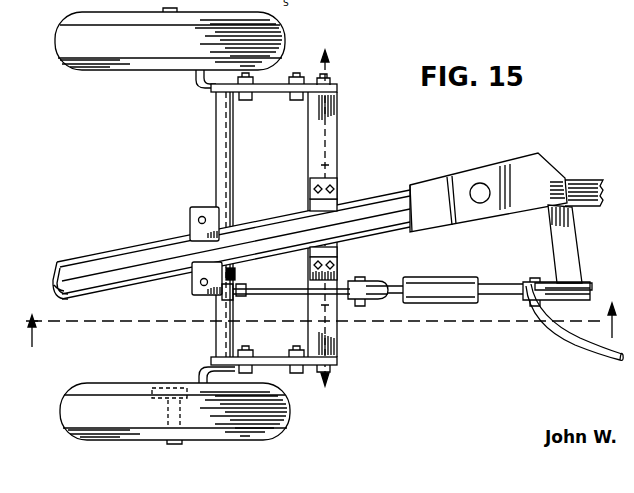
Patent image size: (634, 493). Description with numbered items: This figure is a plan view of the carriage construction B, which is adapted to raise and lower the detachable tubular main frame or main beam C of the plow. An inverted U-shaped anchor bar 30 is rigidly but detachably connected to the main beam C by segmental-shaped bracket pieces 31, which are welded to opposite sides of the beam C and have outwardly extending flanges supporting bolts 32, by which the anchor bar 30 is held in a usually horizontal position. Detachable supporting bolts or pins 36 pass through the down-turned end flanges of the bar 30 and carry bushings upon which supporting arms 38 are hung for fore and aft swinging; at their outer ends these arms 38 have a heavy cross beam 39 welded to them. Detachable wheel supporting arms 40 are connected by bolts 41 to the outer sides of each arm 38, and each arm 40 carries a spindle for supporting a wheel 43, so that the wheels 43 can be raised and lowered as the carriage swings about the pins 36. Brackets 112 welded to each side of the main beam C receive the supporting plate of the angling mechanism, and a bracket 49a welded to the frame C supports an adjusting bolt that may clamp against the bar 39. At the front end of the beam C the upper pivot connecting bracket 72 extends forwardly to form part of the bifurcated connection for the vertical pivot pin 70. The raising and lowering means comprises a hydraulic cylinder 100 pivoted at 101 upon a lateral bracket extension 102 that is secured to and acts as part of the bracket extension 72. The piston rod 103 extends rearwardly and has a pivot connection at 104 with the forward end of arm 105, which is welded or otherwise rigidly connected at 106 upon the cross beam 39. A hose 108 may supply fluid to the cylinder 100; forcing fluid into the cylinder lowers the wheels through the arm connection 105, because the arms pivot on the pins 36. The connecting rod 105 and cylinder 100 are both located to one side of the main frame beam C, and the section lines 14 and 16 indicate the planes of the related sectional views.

The section line 14- 14 is at (322, 314).
The section line 16- 16 is at (335, 219).
The anchor bar 30 is at (312, 129).
The bracket pieces 31 is at (310, 204).
The bolts 32 is at (310, 188).
The supporting bolts or pins 36 is at (330, 82).
The supporting arms 38 is at (265, 88).
The cross beam 39 is at (216, 148).
The wheel supporting arms 40 is at (205, 86).
The bolts 41 is at (245, 100).
The wheel 43 is at (88, 42).
The bracket 49a is at (232, 272).
The vertical pivot pin 70 is at (478, 184).
The upper pivot connecting bracket 72 is at (437, 180).
The hydraulic cylinder 100 is at (468, 280).
The pivot 101 is at (548, 284).
The lateral bracket extension 102 is at (565, 228).
The piston rod 103 is at (396, 284).
The pivot connection 104 is at (362, 300).
The arm 105 is at (288, 292).
The connection 106 is at (222, 298).
The hose 108 is at (575, 338).
The brackets 112 is at (190, 208).
The carriage construction B is at (183, 50).
The main beam C is at (384, 198).